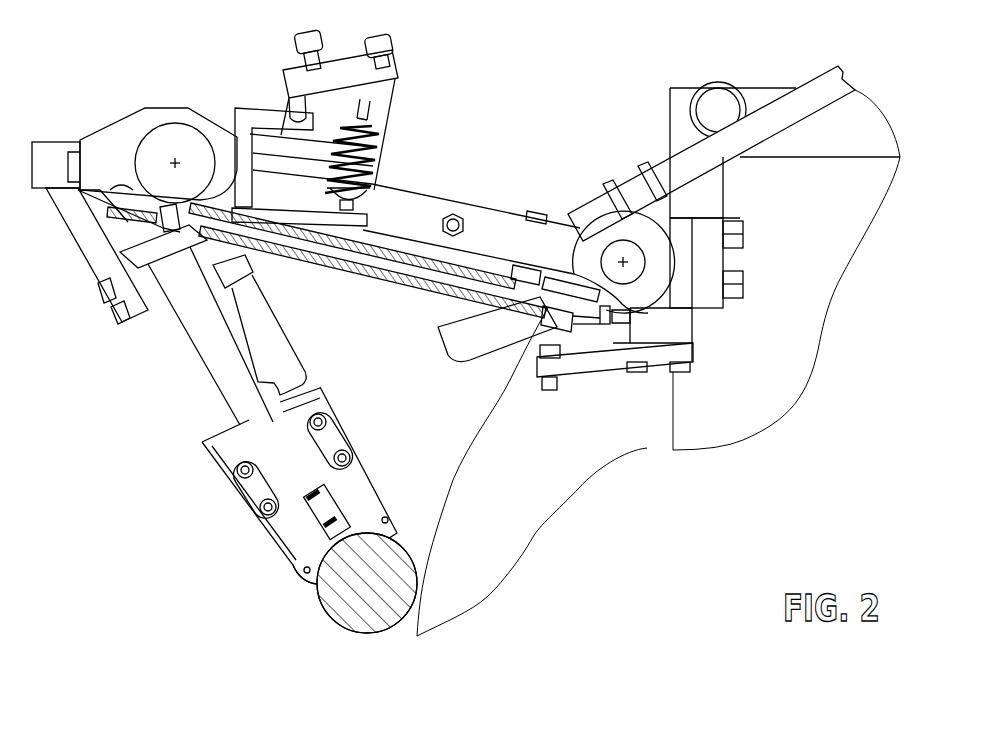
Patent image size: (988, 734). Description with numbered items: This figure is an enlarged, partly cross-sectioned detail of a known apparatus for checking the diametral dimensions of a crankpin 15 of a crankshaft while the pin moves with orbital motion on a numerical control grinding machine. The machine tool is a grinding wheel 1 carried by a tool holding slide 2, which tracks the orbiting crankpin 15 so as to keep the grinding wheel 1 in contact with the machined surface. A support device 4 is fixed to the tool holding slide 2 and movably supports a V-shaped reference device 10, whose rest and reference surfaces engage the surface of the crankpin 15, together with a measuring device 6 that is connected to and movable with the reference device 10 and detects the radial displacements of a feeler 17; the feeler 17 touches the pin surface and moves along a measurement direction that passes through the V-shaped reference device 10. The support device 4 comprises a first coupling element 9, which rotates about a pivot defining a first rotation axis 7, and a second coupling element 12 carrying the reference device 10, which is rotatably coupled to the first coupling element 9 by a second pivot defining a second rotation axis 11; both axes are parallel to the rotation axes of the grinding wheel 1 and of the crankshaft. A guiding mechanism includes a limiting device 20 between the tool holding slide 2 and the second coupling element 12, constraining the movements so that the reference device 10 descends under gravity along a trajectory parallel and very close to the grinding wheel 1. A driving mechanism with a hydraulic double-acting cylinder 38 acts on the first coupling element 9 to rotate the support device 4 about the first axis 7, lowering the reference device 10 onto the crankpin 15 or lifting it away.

The grinding wheel 1 is at (550, 498).
The tool holding slide 2 is at (770, 363).
The support device 4 is at (417, 158).
The measuring device 6 is at (327, 507).
The first rotation axis 7 is at (625, 258).
The first coupling element 9 is at (493, 233).
The reference device 10 is at (290, 540).
The second rotation axis 11 is at (176, 160).
The second coupling element 12 is at (122, 147).
The crankpin 15 is at (405, 580).
The feeler 17 is at (340, 540).
The limiting device 20 is at (396, 320).
The double-acting cylinder 38 is at (692, 175).